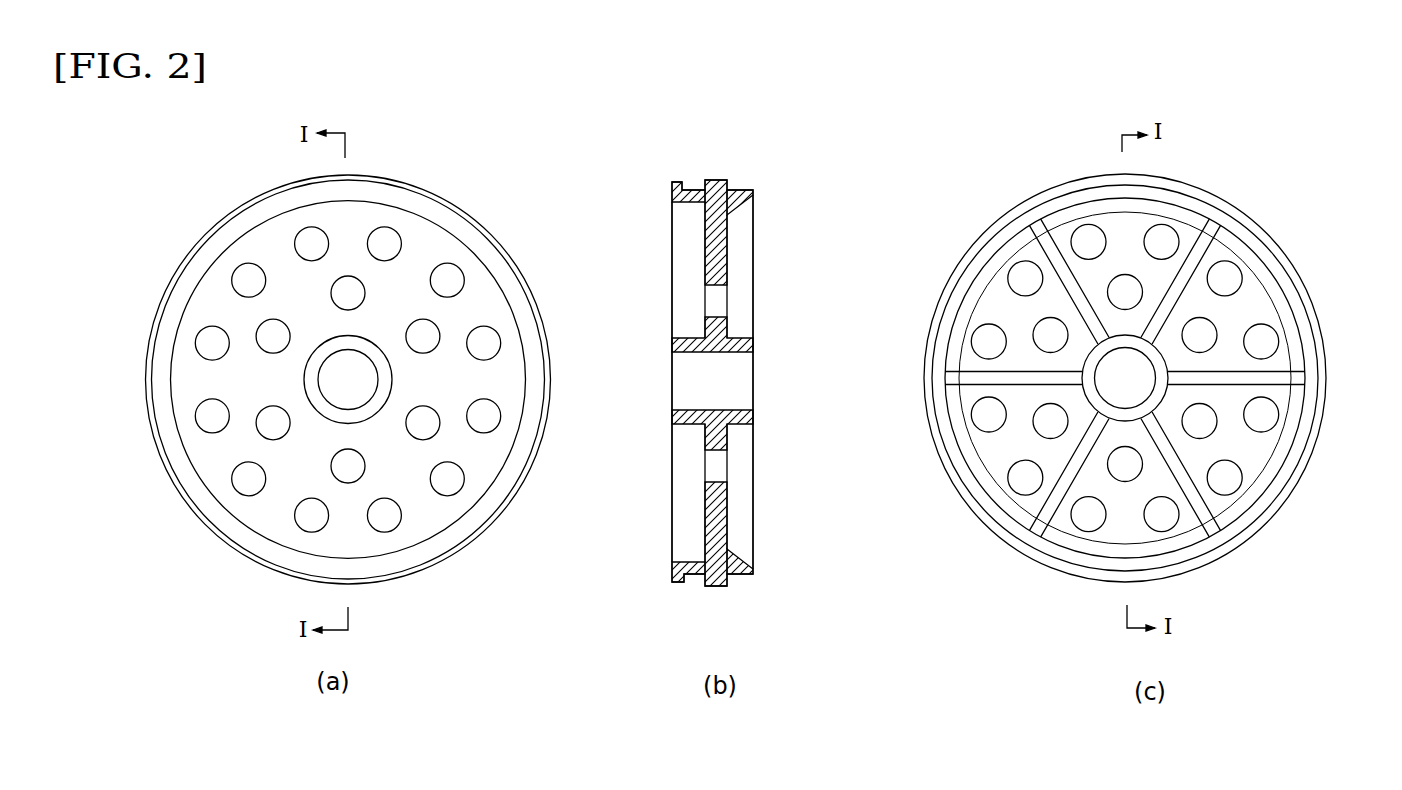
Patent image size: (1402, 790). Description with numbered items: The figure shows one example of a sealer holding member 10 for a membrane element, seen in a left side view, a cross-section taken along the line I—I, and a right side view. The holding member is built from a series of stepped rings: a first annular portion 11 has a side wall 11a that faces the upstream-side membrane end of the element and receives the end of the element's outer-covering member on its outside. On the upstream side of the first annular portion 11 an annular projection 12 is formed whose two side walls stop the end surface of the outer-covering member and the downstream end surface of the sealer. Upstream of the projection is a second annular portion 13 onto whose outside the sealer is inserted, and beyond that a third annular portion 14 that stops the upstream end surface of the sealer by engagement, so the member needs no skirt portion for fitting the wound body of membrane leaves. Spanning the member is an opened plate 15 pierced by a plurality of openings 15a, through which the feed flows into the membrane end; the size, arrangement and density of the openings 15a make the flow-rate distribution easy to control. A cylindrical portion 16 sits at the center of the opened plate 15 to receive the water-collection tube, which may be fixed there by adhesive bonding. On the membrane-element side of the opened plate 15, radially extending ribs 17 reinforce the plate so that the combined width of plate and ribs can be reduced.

The cutting device / disc assembly 10 is at (428, 181).
The first annular portion 11 is at (737, 182).
The side wall 11a is at (753, 188).
The annular projection 12 is at (715, 178).
The second annular portion 13 is at (695, 188).
The third annular portion 14 is at (481, 252).
The opened plate 15 is at (464, 307).
The openings 15a is at (492, 421).
The cylindrical portion 16 is at (392, 382).
The ribs 17 is at (753, 253).